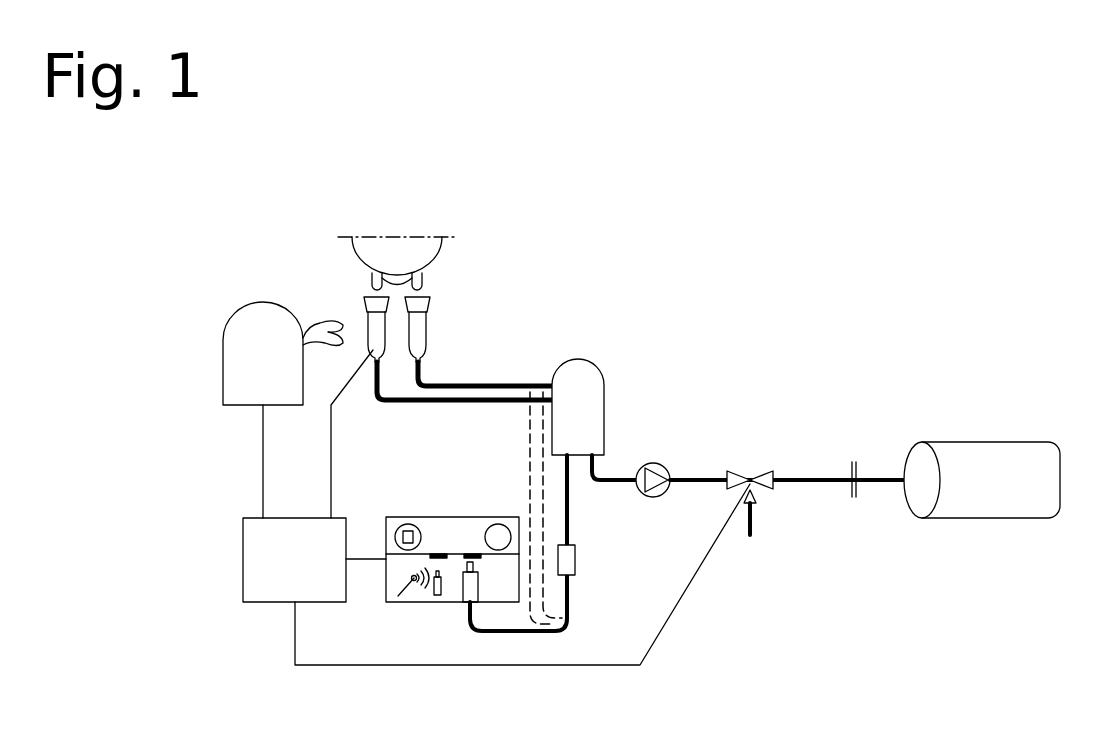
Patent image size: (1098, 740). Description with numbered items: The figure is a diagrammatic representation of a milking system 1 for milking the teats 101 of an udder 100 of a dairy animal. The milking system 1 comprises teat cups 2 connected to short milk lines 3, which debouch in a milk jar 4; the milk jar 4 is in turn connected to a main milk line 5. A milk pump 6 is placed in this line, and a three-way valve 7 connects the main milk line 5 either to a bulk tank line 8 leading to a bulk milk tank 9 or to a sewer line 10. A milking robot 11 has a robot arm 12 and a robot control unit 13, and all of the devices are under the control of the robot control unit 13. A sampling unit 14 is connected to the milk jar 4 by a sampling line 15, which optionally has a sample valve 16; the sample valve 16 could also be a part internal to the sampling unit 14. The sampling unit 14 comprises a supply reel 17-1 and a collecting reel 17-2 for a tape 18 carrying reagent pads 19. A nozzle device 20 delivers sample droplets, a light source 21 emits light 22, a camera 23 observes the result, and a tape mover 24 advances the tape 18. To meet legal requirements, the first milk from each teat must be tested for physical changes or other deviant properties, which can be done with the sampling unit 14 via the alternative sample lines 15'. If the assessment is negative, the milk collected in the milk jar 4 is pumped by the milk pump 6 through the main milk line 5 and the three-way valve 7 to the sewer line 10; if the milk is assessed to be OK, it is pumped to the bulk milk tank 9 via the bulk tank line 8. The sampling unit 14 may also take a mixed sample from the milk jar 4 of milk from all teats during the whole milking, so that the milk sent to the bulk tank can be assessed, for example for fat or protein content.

The milking system 1 is at (690, 337).
The teat cups 2 is at (385, 338).
The short milk lines 3 is at (472, 394).
The milk jar 4 is at (584, 375).
The main milk line 5 is at (612, 472).
The milk pump 6 is at (662, 466).
The three-way valve 7 is at (748, 478).
The bulk tank line 8 is at (800, 478).
The bulk milk tank 9 is at (975, 452).
The sewer line 10 is at (753, 522).
The milking robot 11 is at (232, 318).
The robot arm 12 is at (325, 320).
The robot control unit 13 is at (255, 556).
The sampling unit 14 is at (448, 517).
The sampling line 15 is at (554, 543).
The alternative sample lines 15' is at (516, 508).
The sample valve 16 is at (575, 560).
The supply reel 17-1 is at (493, 527).
The collecting reel 17-2 is at (396, 535).
The tape 18 is at (448, 556).
The reagent pads 19 is at (452, 575).
The nozzle device 20 is at (474, 566).
The light source 21 is at (404, 600).
The light 22 is at (398, 572).
The camera 23 is at (440, 597).
The tape mover 24 is at (395, 540).
The udder 100 is at (392, 252).
The teats 101 is at (414, 283).